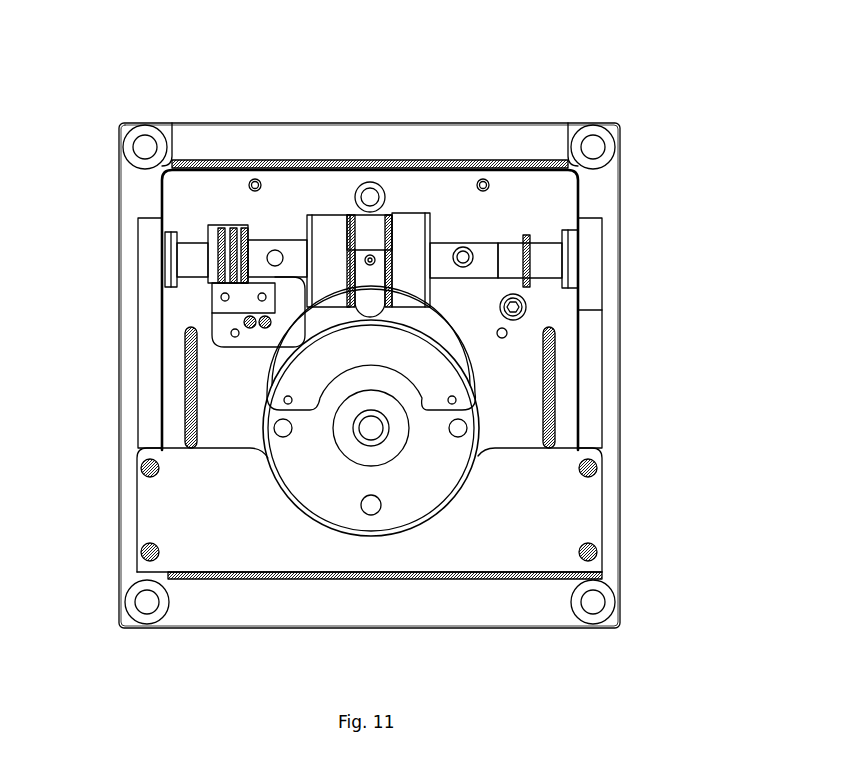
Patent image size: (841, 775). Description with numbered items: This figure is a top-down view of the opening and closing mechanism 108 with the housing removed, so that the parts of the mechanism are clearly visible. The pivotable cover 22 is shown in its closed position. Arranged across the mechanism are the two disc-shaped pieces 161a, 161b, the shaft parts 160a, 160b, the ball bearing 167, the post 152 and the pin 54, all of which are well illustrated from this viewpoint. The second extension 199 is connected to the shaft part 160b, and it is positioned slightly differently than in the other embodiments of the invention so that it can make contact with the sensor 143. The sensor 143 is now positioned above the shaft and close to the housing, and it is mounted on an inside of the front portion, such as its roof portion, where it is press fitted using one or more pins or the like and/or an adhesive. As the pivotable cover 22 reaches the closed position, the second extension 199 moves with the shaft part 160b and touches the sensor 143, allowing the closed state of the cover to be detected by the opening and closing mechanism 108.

The opening and closing mechanism 108 is at (298, 145).
The pivotable cover 22 is at (518, 520).
The post 152 is at (364, 204).
The ball bearing 167 is at (370, 234).
The disc-shaped piece 161a is at (415, 232).
The disc-shaped piece 161b is at (323, 226).
The shaft part 160a is at (540, 257).
The shaft part 160b is at (192, 258).
The second extension 199 is at (278, 257).
The sensor 143 is at (222, 297).
The pin 54 is at (365, 262).